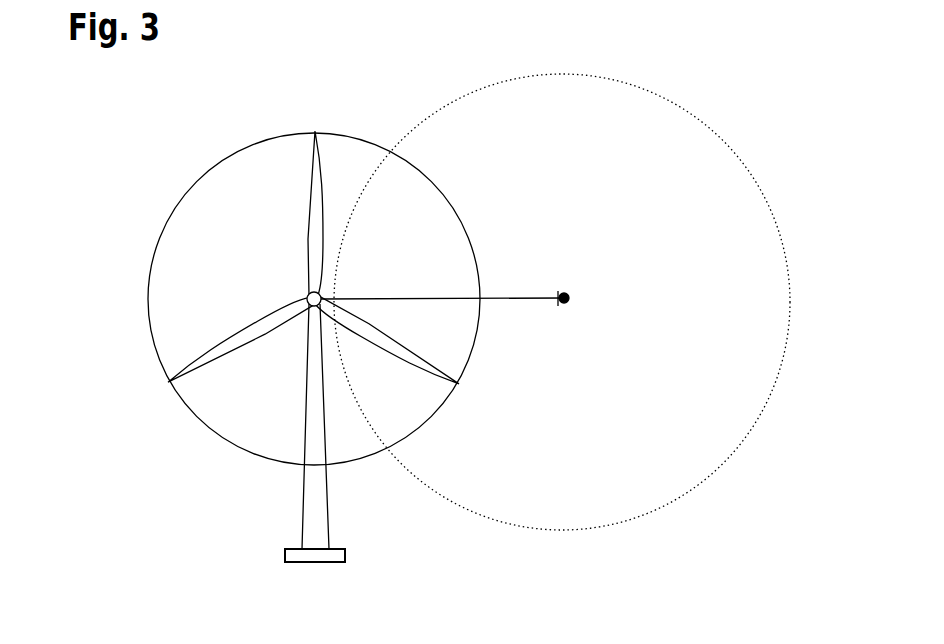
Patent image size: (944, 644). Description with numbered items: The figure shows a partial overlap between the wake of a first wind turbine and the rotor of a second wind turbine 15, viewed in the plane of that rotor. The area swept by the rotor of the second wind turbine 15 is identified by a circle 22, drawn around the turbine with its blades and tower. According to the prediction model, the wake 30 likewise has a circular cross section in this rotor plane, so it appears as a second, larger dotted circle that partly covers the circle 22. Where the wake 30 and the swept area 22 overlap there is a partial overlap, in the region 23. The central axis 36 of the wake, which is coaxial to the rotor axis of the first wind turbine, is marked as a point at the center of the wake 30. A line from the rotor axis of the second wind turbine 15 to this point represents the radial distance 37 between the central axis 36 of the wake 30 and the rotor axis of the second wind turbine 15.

The second wind turbine 15 is at (308, 185).
The circle 22 is at (149, 272).
The region 23 is at (313, 222).
The wake 30 is at (789, 303).
The central axis 36 is at (568, 294).
The radial distance 37 is at (428, 297).